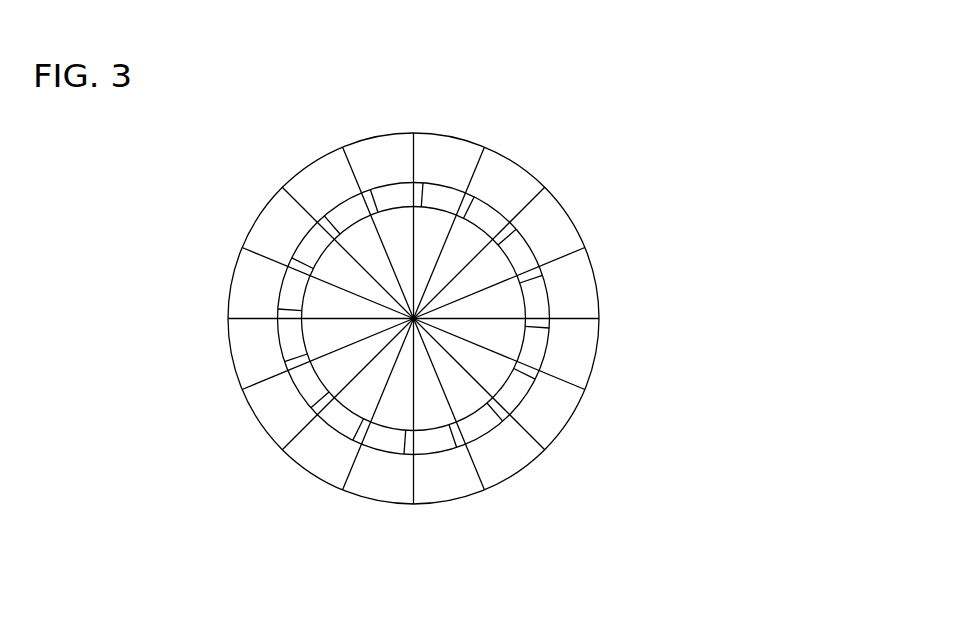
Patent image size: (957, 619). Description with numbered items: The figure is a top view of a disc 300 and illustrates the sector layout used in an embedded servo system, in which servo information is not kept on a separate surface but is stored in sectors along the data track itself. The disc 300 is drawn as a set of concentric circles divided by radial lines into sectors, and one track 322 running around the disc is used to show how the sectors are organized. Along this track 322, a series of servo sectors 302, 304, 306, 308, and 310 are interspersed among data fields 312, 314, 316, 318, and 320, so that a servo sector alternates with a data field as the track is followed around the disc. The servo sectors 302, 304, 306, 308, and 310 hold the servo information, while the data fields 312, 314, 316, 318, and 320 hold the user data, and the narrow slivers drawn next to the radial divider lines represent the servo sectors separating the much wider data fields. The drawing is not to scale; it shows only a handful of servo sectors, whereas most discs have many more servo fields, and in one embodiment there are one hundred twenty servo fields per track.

The disc 300 is at (263, 118).
The servo sector 302 is at (414, 193).
The servo sector 304 is at (464, 203).
The servo sector 306 is at (536, 266).
The servo sector 308 is at (535, 272).
The servo sector 310 is at (550, 325).
The data field 312 is at (440, 197).
The data field 314 is at (482, 214).
The data field 316 is at (518, 257).
The data field 318 is at (533, 303).
The data field 320 is at (530, 347).
The track 322 is at (414, 318).